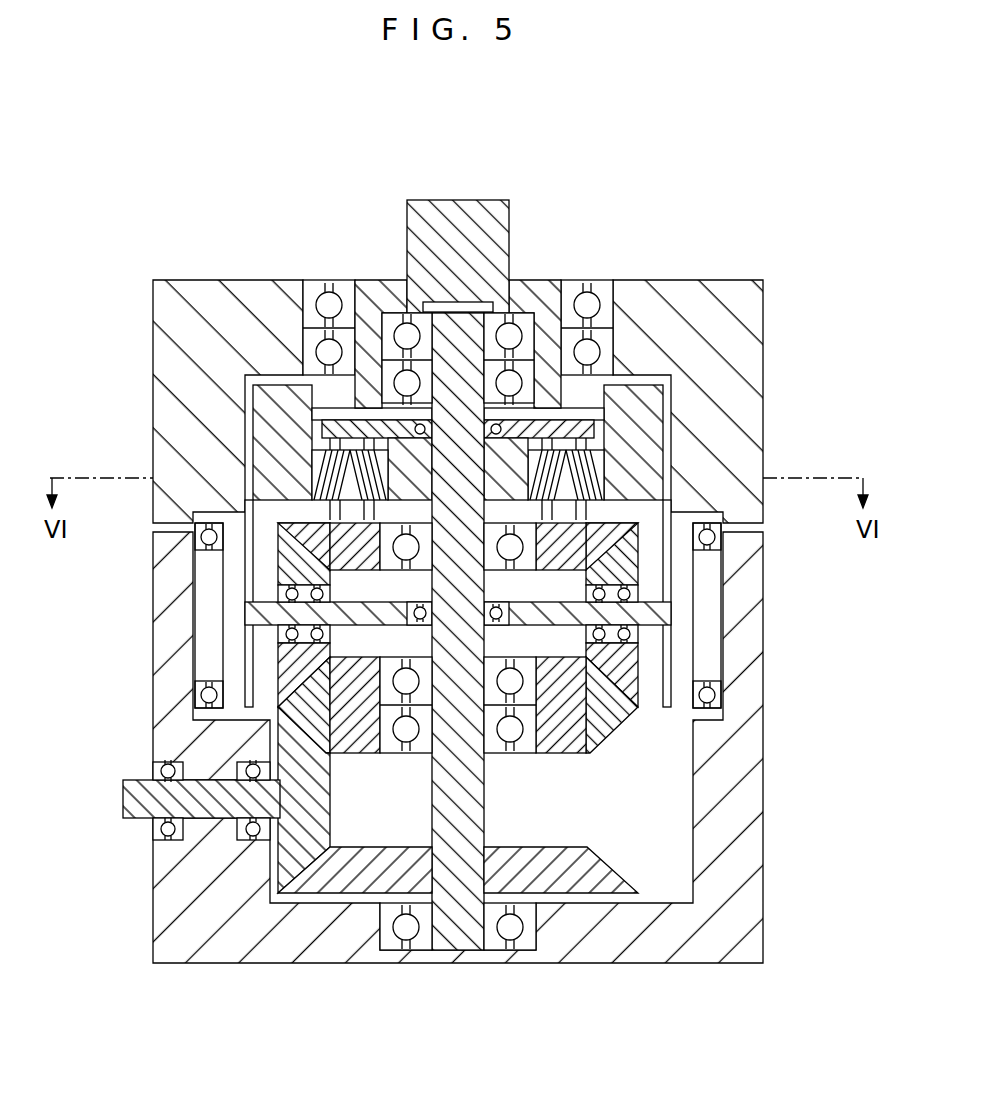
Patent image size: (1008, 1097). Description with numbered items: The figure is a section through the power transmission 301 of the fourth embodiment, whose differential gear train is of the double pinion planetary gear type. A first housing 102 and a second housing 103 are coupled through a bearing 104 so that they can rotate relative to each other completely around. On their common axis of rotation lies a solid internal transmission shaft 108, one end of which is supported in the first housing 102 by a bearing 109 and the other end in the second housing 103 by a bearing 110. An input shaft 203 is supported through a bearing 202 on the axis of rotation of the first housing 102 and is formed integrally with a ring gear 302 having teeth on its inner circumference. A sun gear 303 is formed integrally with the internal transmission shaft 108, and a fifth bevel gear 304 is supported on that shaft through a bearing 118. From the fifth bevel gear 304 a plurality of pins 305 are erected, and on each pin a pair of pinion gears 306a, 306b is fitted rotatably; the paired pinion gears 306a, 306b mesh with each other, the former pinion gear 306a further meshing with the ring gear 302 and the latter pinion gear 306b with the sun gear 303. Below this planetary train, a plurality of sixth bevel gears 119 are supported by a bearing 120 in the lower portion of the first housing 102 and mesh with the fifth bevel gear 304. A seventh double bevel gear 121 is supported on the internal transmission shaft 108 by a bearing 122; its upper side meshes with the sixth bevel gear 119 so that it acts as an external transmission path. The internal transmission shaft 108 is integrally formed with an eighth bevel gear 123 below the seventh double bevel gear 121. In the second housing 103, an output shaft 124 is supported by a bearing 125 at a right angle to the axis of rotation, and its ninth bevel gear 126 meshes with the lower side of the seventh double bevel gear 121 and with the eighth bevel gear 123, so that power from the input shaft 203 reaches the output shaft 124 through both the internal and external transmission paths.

The first housing 102 is at (706, 292).
The second housing 103 is at (695, 955).
The bearing 104 is at (706, 552).
The internal transmission shaft 108 is at (460, 325).
The bearing 109 is at (520, 323).
The bearing 110 is at (524, 953).
The bearing 118 is at (278, 548).
The sixth bevel gear 119 is at (278, 573).
The bearing 120 is at (278, 636).
The seventh double bevel gear 121 is at (598, 720).
The bearing 122 is at (525, 748).
The eighth bevel gear 123 is at (597, 877).
The output shaft 124 is at (125, 780).
The bearing 125 is at (153, 832).
The ninth bevel gear 126 is at (323, 797).
The bearing 202 is at (344, 292).
The input shaft 203 is at (455, 213).
The power transmission 301 is at (263, 250).
The ring gear 302 is at (267, 417).
The sun gear 303 is at (313, 477).
The fifth bevel gear 304 is at (328, 518).
The pin 305 is at (595, 512).
The pinion gear 306a is at (606, 458).
The pinion gear 306b is at (606, 487).